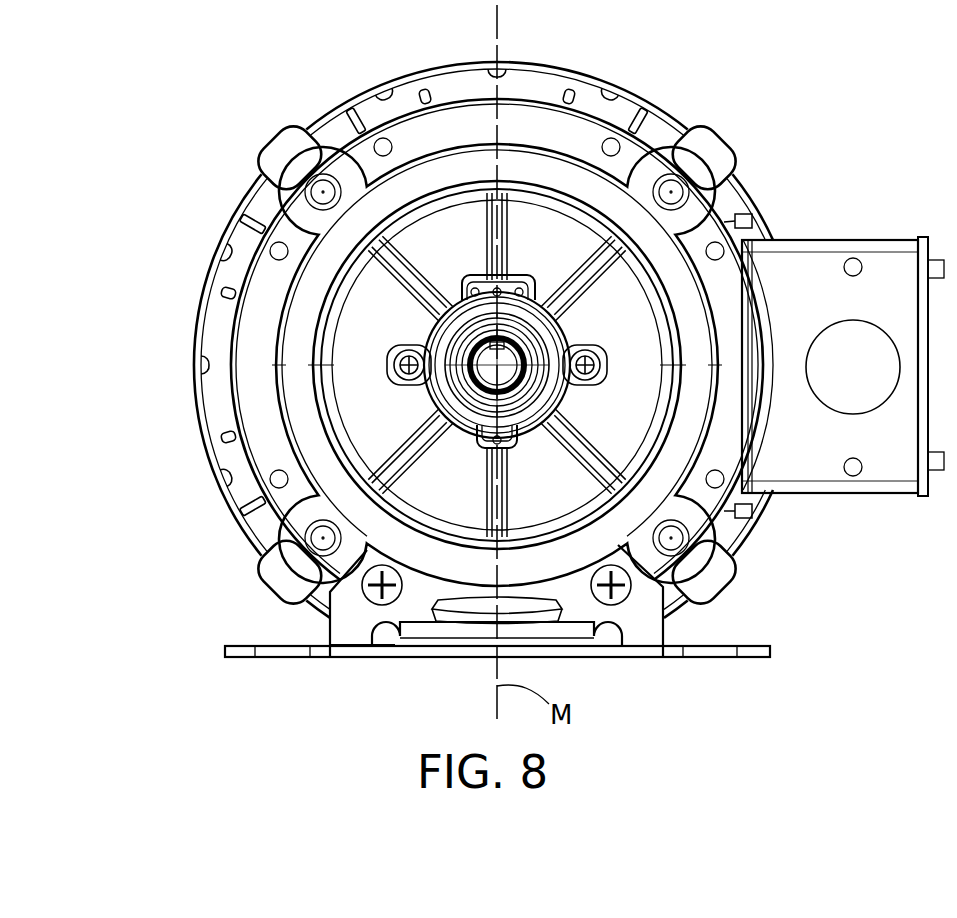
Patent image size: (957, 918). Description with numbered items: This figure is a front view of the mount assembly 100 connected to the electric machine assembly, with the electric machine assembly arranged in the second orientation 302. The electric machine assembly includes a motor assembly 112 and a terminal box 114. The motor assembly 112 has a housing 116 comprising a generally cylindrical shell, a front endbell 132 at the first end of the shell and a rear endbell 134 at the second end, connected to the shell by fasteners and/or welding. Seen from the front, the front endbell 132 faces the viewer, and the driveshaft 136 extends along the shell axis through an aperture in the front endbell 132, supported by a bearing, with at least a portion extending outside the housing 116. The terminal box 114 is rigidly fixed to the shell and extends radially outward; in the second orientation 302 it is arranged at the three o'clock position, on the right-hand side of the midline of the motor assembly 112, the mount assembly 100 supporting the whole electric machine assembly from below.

The mount assembly 100 is at (262, 676).
The motor assembly 112 is at (512, 117).
The terminal box 114 is at (838, 238).
The housing 116 is at (665, 82).
The front endbell 132 is at (250, 362).
The rear endbell 134 is at (212, 248).
The driveshaft 136 is at (497, 366).
The second orientation 302 is at (240, 115).